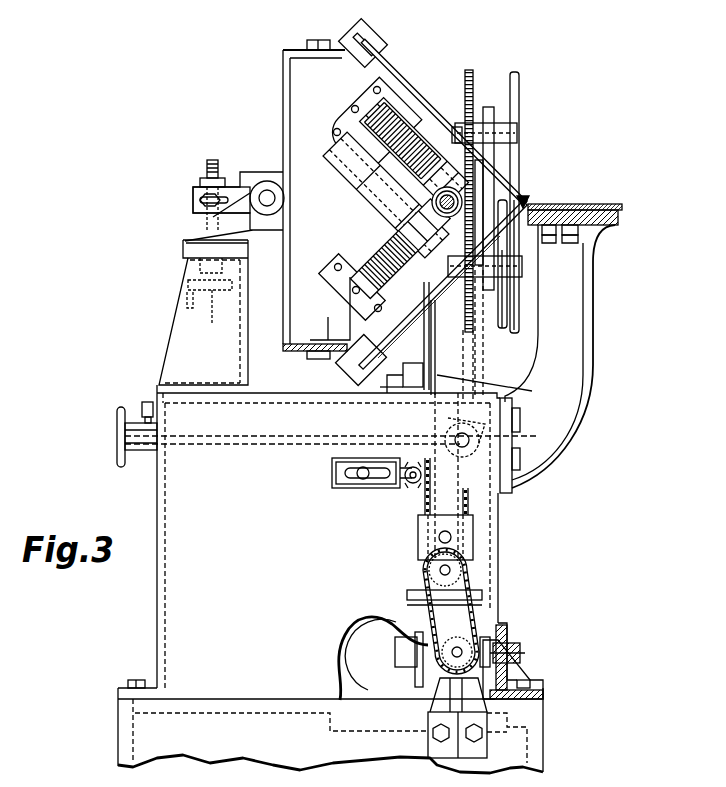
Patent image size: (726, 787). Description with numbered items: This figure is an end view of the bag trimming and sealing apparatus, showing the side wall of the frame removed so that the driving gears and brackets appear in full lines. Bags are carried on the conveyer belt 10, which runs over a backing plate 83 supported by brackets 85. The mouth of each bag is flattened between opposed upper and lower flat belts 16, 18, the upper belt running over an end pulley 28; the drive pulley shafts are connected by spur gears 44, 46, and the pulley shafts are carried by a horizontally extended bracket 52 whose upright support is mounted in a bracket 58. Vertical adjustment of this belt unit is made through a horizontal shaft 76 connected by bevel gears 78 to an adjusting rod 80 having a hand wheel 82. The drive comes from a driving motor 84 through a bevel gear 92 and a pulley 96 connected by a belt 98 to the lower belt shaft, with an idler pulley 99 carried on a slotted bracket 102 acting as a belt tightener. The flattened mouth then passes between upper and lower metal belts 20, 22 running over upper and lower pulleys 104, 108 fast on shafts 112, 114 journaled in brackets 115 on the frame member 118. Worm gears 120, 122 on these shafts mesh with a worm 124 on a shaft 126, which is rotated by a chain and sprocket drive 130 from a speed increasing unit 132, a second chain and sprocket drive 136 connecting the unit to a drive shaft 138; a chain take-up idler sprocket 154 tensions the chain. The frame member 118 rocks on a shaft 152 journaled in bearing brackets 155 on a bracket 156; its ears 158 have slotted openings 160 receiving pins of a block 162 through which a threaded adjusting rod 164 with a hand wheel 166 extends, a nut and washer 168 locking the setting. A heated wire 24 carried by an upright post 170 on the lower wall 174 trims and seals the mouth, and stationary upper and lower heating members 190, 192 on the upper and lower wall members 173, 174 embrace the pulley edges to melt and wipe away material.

The conveyer belt 10 is at (606, 206).
The upper flat belt 16 is at (514, 158).
The lower flat belt 18 is at (511, 293).
The upper metal belt 20 is at (527, 200).
The lower metal belt 22 is at (507, 233).
The heated wire 24 is at (530, 200).
The end pulley 28 is at (519, 110).
The spur gear 44 is at (470, 70).
The spur gear 46 is at (497, 330).
The bracket 52 is at (488, 107).
The bracket 58 is at (483, 368).
The horizontal shaft 76 is at (531, 438).
The bevel gears 78 is at (461, 453).
The adjusting rod 80 is at (238, 446).
The hand wheel 82 is at (118, 449).
The backing plate 83 is at (618, 216).
The driving motor 84 is at (393, 614).
The bracket 85 is at (590, 362).
The bevel gear 92 is at (527, 673).
The pulley 96 is at (402, 695).
The belt 98 is at (437, 352).
The idler pulley 99 is at (499, 390).
The slotted bracket 102 is at (383, 376).
The upper pulley 104 is at (407, 80).
The lower pulley 108 is at (421, 338).
The shaft 112 is at (370, 187).
The shaft 114 is at (370, 213).
The bracket 115 is at (348, 98).
The frame member 118 is at (281, 69).
The worm gear 120 is at (377, 140).
The worm gear 122 is at (367, 257).
The worm 124 is at (447, 187).
The shaft 126 is at (440, 202).
The chain and sprocket drive 130 is at (424, 506).
The speed increasing unit 132 is at (476, 541).
The second chain and sprocket drive 136 is at (480, 604).
The drive shaft 138 is at (463, 649).
The shaft 152 is at (267, 190).
The chain take-up idler sprocket 154 is at (408, 482).
The bearing bracket 155 is at (185, 242).
The bracket 156 is at (184, 302).
The ears 158 is at (197, 188).
The slotted openings 160 is at (204, 199).
The block 162 is at (205, 214).
The threaded adjusting rod 164 is at (210, 162).
The hand wheel 166 is at (209, 304).
The nut and washer 168 is at (222, 178).
The upright post 170 is at (333, 318).
The upper wall member 173 is at (283, 50).
The lower wall 174 is at (293, 352).
The upper heating member 190 is at (372, 28).
The lower heating member 192 is at (345, 373).